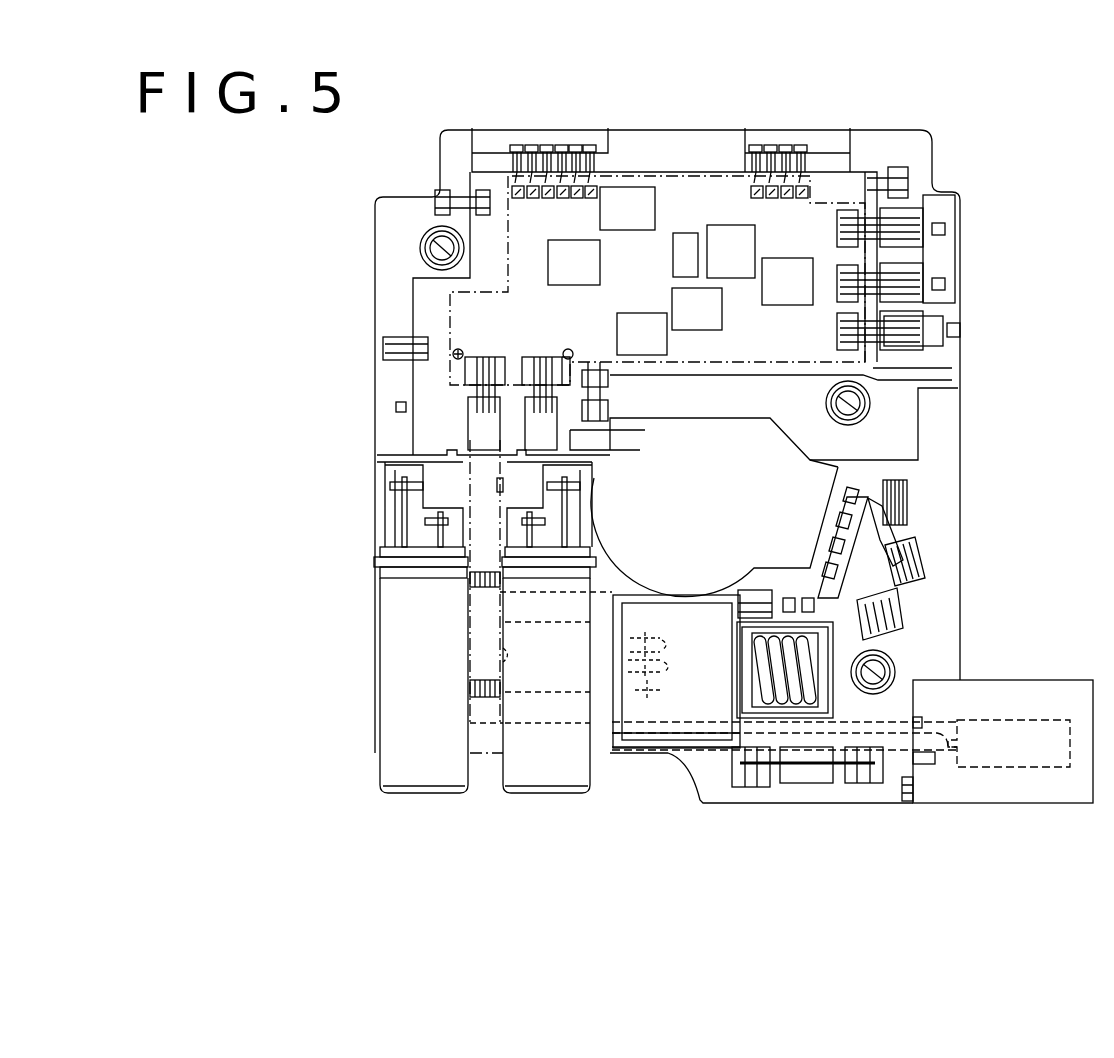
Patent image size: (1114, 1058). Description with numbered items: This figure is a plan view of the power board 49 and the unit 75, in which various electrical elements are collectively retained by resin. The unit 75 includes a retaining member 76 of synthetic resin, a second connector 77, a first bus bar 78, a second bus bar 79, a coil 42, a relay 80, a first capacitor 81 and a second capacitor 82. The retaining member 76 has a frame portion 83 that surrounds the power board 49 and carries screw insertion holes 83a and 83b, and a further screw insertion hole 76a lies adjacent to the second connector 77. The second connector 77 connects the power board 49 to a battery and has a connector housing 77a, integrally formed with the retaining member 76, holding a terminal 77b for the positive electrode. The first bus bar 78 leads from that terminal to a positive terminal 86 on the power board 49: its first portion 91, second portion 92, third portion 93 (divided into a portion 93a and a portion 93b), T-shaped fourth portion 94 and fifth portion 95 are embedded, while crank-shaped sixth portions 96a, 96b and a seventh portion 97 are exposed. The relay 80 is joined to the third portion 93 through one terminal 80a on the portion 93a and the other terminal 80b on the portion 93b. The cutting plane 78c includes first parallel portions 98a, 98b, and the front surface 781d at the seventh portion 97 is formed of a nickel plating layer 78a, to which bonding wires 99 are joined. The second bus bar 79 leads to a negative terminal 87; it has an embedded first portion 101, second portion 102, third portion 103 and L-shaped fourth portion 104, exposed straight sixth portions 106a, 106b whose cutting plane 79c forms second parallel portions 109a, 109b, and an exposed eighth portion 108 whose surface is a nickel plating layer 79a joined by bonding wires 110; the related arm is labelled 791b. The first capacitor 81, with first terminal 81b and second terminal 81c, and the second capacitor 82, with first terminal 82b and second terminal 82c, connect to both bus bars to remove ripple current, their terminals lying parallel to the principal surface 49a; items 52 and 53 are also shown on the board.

The coil 42 is at (803, 718).
The power board 49 is at (863, 372).
The principal surface 49a is at (952, 378).
The screw boss 52 is at (808, 363).
The microcomputer 53 is at (786, 305).
The unit 75 is at (960, 473).
The retaining member 76 is at (700, 805).
The screw insertion hole 76a is at (896, 665).
The second connector 77 is at (980, 805).
The connector housing 77a is at (1060, 688).
The terminal 77b is at (1037, 770).
The first bus bar 78 is at (553, 622).
The nickel plating layer 78a is at (470, 375).
The cutting plane 78c is at (463, 600).
The second bus bar 79 is at (520, 722).
The nickel plating layer 79a is at (603, 446).
The cutting plane 79c is at (420, 487).
The holder arm portion 791b is at (640, 422).
The front surface 781d is at (468, 443).
The relay 80 is at (722, 752).
The terminal 80a is at (655, 665).
The terminal 80b is at (603, 748).
The first capacitor 81 is at (592, 745).
The first terminal 81b is at (478, 612).
The second terminal 81c is at (553, 517).
The second capacitor 82 is at (467, 775).
The first terminal 82b is at (445, 565).
The second terminal 82c is at (400, 520).
The frame portion 83 is at (684, 148).
The screw insertion hole 83a is at (875, 405).
The screw insertion hole 83b is at (421, 247).
The positive terminal 86 is at (482, 357).
The negative terminal 87 is at (533, 357).
The first portion 91 is at (913, 762).
The second portion 92 is at (880, 775).
The third portion 93 is at (770, 498).
The portion 93a is at (675, 617).
The portion 93b is at (697, 615).
The fourth portion 94 is at (606, 586).
The fifth portion 95 is at (503, 658).
The sixth portion 96a is at (568, 510).
The sixth portion 96b is at (437, 525).
The seventh portion 97 is at (470, 410).
The first parallel portion 98a is at (583, 522).
The first parallel portion 98b is at (425, 548).
The bonding wire 99 is at (413, 372).
The first portion 101 is at (958, 720).
The second portion 102 is at (897, 717).
The third portion 103 is at (606, 745).
The fourth portion 104 is at (537, 725).
The sixth portion 106a is at (585, 478).
The sixth portion 106b is at (392, 482).
The eighth portion 108 is at (608, 405).
The second parallel portion 109a is at (586, 494).
The second parallel portion 109b is at (390, 497).
The bonding wire 110 is at (558, 355).